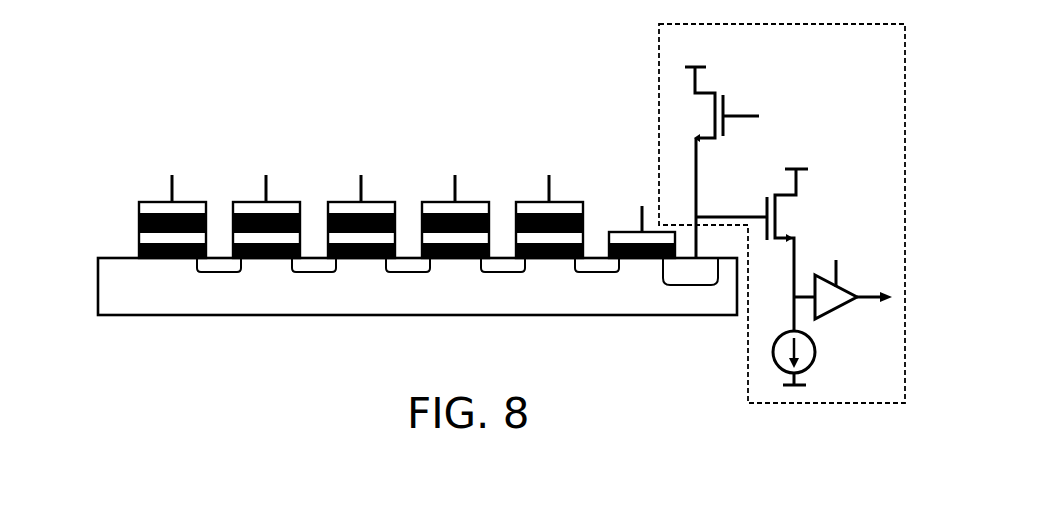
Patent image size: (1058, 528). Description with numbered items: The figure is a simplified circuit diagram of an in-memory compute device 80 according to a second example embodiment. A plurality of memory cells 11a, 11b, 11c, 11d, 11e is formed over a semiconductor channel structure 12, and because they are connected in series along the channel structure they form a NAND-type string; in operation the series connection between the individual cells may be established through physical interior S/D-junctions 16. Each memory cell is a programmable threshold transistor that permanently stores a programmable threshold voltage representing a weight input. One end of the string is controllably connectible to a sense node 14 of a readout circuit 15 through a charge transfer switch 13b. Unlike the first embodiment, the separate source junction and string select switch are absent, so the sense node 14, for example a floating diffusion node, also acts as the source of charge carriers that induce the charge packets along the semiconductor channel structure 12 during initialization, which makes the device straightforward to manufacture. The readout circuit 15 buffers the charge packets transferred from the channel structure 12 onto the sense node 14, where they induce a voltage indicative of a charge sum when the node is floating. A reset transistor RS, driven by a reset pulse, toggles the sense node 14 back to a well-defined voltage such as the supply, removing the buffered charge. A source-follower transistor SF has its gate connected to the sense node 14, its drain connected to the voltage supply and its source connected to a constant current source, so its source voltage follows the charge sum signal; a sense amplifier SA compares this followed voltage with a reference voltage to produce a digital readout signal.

The in-memory compute device 80 is at (136, 96).
The memory cell 11a is at (162, 193).
The memory cell 11b is at (256, 193).
The memory cell 11c is at (347, 193).
The memory cell 11d is at (439, 193).
The memory cell 11e is at (532, 193).
The charge transfer switch 13b is at (629, 223).
The semiconductor channel structure 12 is at (460, 278).
The interior S/D-junctions 16 is at (220, 274).
The sense node 14 is at (688, 280).
The readout circuit 15 is at (747, 362).
The reset transistor RS is at (690, 116).
The source-follower transistor SF is at (795, 214).
The sense amplifier SA is at (838, 308).